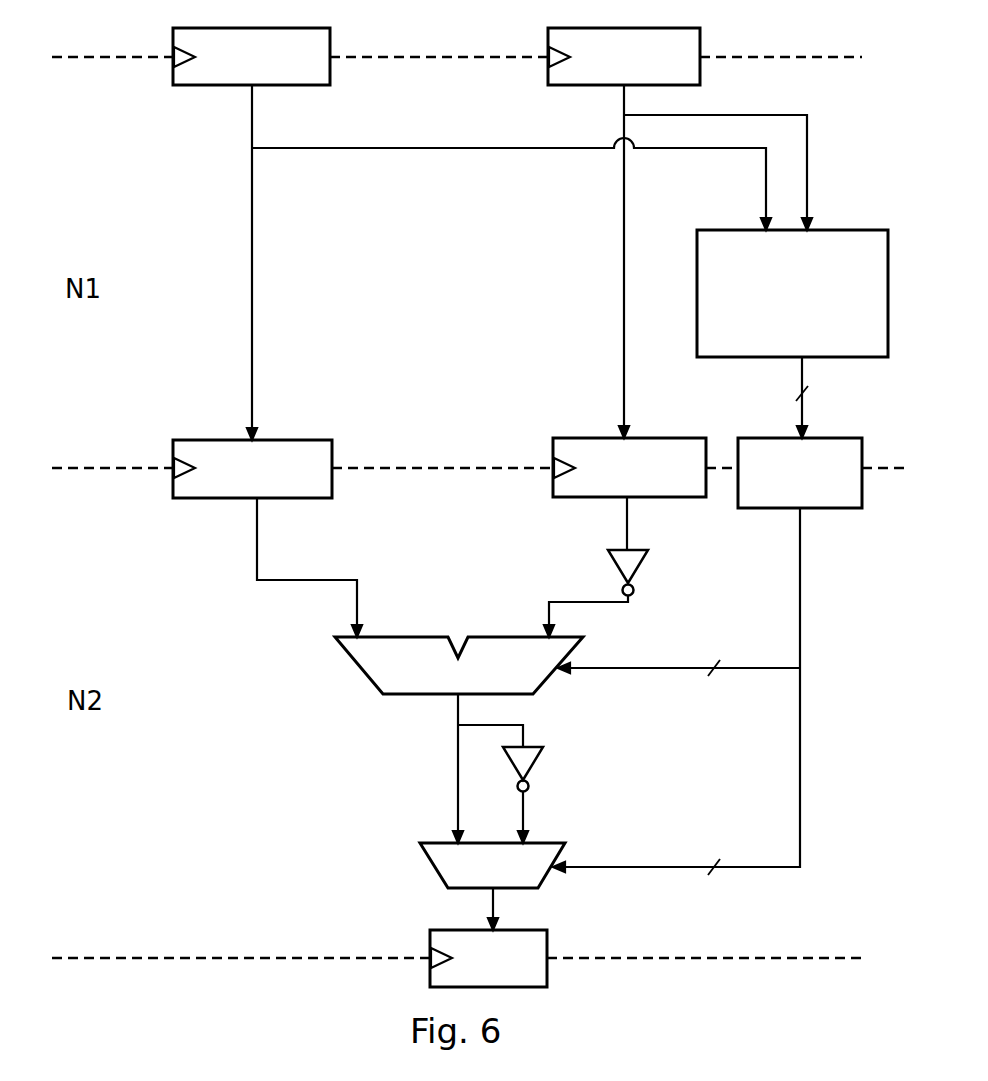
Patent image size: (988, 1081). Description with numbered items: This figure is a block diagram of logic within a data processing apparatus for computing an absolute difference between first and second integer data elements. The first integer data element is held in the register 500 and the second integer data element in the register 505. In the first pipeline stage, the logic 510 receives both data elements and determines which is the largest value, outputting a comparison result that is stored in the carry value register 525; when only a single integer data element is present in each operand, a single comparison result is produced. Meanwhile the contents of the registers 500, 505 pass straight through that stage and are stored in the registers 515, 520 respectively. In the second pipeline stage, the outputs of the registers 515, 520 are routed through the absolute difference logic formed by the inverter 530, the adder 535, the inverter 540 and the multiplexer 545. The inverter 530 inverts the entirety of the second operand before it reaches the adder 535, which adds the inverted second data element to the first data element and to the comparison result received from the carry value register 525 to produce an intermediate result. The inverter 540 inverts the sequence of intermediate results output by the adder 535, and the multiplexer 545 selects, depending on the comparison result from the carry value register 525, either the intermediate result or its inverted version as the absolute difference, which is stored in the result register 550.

The register 500 is at (331, 36).
The register 505 is at (701, 36).
The logic 510 is at (752, 358).
The register 515 is at (333, 478).
The register 520 is at (552, 486).
The carry value register 525 is at (833, 509).
The inverter 530 is at (640, 566).
The adder 535 is at (353, 665).
The inverter 540 is at (537, 763).
The multiplexer 545 is at (435, 872).
The result register 550 is at (548, 941).